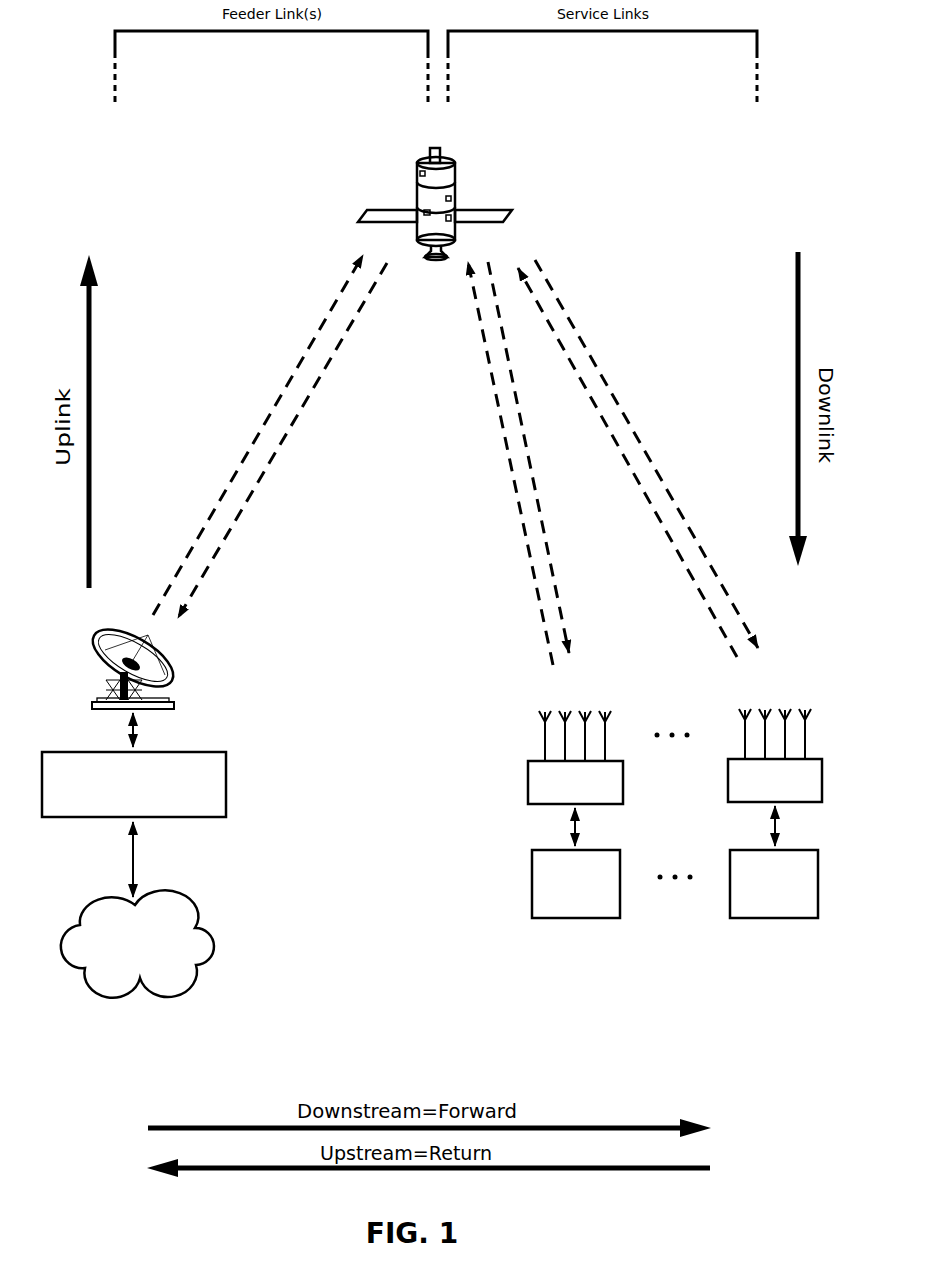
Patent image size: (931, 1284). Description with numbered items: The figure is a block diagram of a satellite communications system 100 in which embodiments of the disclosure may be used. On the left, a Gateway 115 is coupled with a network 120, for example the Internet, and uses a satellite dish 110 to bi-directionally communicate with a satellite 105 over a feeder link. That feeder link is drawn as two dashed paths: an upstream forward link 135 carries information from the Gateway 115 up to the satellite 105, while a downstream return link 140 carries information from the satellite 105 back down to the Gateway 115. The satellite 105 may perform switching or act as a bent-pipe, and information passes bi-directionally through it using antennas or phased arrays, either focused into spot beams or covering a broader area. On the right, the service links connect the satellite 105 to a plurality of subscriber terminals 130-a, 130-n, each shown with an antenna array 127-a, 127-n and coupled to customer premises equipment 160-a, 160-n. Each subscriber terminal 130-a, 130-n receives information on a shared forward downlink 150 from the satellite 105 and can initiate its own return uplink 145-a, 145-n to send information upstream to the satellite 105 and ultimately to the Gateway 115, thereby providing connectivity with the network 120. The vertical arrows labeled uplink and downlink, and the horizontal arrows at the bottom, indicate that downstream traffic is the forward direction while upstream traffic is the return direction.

The system 100 is at (677, 1018).
The satellite 105 is at (437, 147).
The satellite dish 110 is at (172, 683).
The gateway 115 is at (226, 787).
The network 120 is at (210, 950).
The subscriber terminal antenna 127-a is at (538, 716).
The subscriber terminal antenna 127-n is at (738, 715).
The subscriber terminal 130-a is at (528, 778).
The subscriber terminal 130-n is at (728, 790).
The upstream forward link 135 is at (258, 436).
The downstream return link 140 is at (320, 372).
The return uplink 145-a is at (512, 472).
The return uplink 145-n is at (630, 472).
The shared forward downlink 150 is at (597, 367).
The customer premises equipment 160-a is at (580, 918).
The customer premises equipment 160-n is at (779, 918).